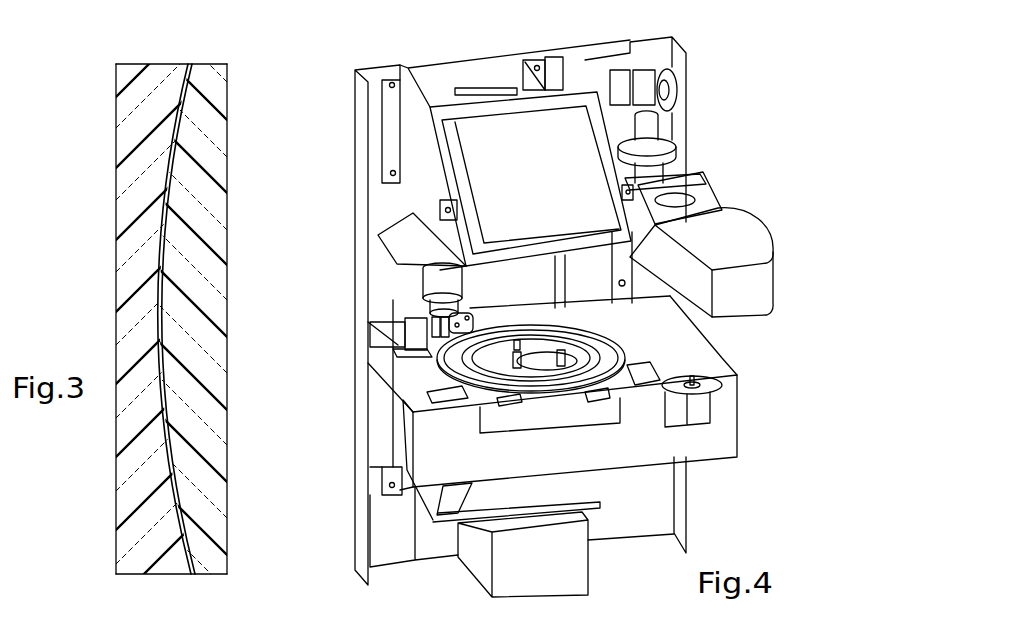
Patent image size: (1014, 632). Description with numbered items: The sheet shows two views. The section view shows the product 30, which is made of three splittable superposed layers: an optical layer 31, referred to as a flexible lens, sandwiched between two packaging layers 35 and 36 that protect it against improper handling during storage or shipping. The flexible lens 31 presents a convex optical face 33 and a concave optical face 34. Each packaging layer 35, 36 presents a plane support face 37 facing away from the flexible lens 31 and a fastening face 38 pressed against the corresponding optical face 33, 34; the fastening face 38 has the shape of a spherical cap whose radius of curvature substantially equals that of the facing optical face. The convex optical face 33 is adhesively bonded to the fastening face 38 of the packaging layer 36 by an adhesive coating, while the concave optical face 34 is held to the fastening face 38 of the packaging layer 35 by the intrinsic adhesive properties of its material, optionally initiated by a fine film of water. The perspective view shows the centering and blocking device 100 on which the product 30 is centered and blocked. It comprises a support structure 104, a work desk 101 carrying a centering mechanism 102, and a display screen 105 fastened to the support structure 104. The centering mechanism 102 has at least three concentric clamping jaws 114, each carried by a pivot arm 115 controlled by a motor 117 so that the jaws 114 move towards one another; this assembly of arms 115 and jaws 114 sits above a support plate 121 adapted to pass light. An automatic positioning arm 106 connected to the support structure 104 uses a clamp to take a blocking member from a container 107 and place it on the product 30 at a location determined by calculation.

In FIG. 3, the product 30 is at (172, 313).
In FIG. 4, the product 30 is at (550, 397).
In FIG. 3, the optical layer (flexible lens) 31 is at (192, 63).
In FIG. 3, the convex optical face 33 is at (158, 328).
In FIG. 3, the concave optical face 34 is at (172, 308).
In FIG. 3, the packaging layer 35 is at (229, 72).
In FIG. 3, the packaging layer 36 is at (143, 63).
In FIG. 3, the plane support face 37 is at (228, 382).
In FIG. 3, the fastening face 38 is at (180, 539).
In FIG. 4, the centering and blocking device 100 is at (530, 312).
In FIG. 4, the work desk 101 is at (737, 354).
In FIG. 4, the centering mechanism 102 is at (605, 328).
In FIG. 4, the support structure 104 is at (378, 202).
In FIG. 4, the display screen 105 is at (483, 127).
In FIG. 4, the automatic positioning arm 106 is at (728, 217).
In FIG. 4, the container 107 is at (725, 398).
In FIG. 4, the clamping jaw 114 is at (560, 350).
In FIG. 4, the pivot arm 115 is at (430, 392).
In FIG. 4, the motor 117 is at (425, 287).
In FIG. 4, the support plate 121 is at (633, 393).